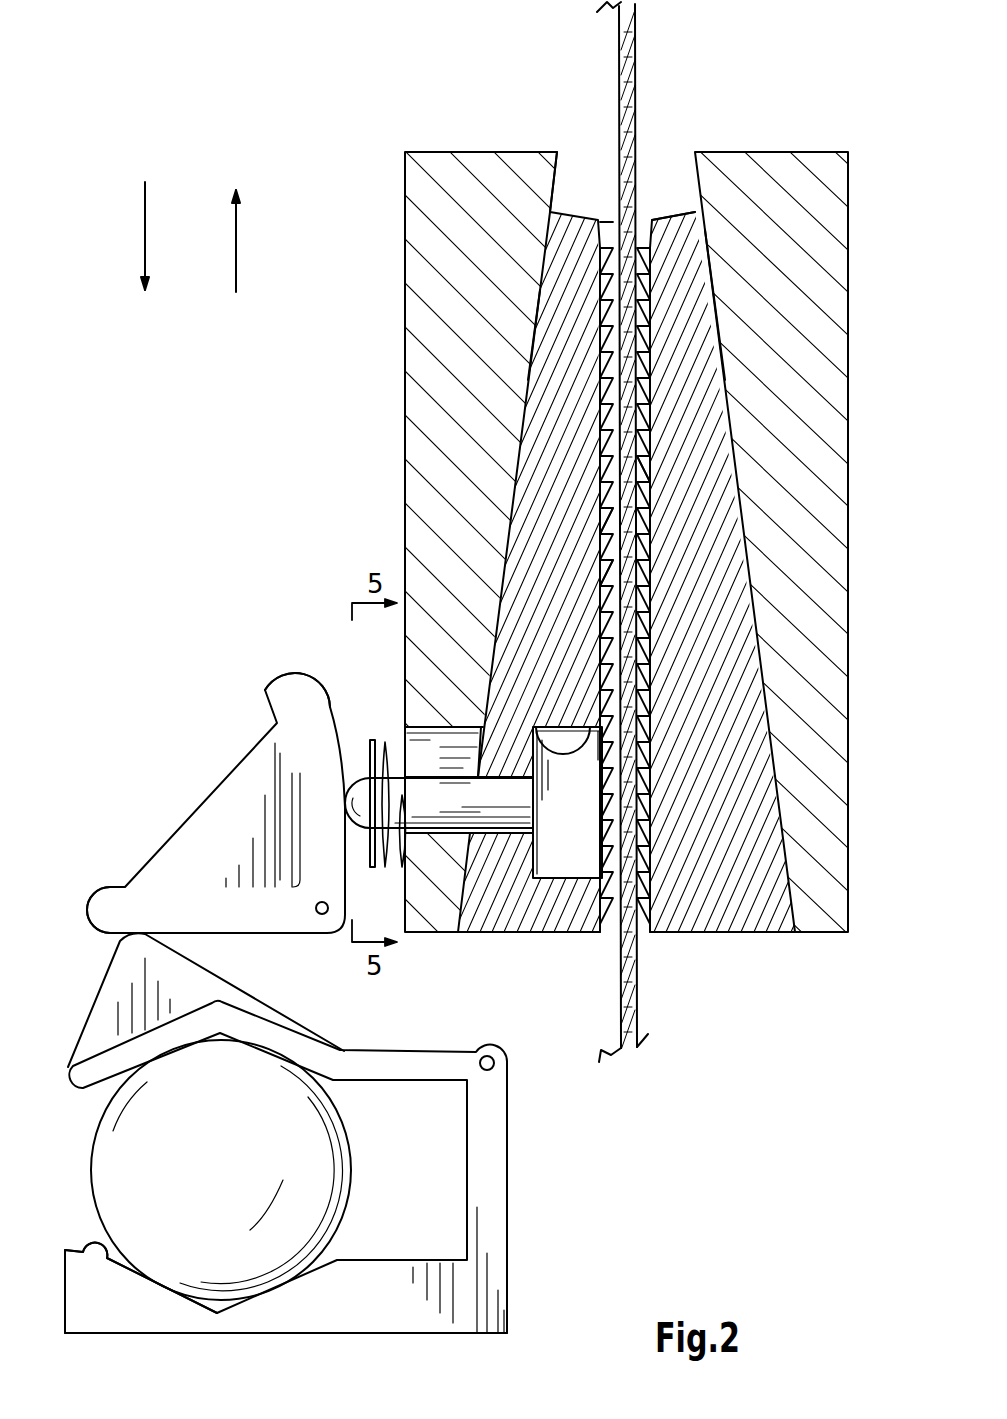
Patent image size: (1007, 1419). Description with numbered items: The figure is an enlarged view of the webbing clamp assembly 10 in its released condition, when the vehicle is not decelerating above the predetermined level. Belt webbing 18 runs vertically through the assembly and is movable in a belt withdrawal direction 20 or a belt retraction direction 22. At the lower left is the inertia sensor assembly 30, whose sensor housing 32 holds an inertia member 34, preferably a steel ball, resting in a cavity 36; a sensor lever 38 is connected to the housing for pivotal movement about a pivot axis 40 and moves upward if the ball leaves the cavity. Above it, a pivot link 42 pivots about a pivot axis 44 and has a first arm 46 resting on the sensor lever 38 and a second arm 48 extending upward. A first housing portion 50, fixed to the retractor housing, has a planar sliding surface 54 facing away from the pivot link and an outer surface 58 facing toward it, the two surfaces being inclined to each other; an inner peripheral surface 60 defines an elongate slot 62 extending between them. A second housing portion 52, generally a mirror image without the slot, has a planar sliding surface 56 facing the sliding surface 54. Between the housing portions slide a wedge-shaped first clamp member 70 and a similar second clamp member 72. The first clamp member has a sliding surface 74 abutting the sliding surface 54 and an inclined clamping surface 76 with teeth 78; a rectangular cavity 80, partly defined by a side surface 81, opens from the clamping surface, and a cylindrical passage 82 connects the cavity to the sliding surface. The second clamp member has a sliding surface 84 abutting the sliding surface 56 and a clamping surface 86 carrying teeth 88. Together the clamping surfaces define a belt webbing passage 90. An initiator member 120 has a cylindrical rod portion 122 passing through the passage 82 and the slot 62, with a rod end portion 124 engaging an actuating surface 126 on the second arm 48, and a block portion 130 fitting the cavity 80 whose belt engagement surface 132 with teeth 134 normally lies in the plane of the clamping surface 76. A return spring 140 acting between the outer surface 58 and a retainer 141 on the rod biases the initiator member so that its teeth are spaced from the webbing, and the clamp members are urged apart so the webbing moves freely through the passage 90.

The webbing clamp assembly 10 is at (736, 1187).
The belt webbing 18 is at (633, 50).
The belt withdrawal direction 20 is at (221, 244).
The belt retraction direction 22 is at (129, 236).
The inertia sensor assembly 30 is at (507, 1347).
The sensor housing 32 is at (317, 1334).
The inertia member 34 is at (89, 1200).
The cavity 36 is at (110, 1263).
The sensor lever 38 is at (79, 990).
The pivot axis 40 is at (480, 1063).
The pivot link 42 is at (218, 760).
The pivot axis 44 is at (316, 912).
The first arm 46 is at (105, 907).
The second arm 48 is at (288, 686).
The first housing portion 50 is at (453, 148).
The second housing portion 52 is at (787, 138).
The planar sliding surface 54 is at (555, 168).
The planar sliding surface 56 is at (687, 168).
The outer surface 58 is at (405, 173).
The inner peripheral surface 60 is at (472, 757).
The elongate slot 62 is at (417, 743).
The first clamp member 70 is at (526, 297).
The second clamp member 72 is at (719, 240).
The planar sliding surface 74 is at (528, 374).
The planar clamping surface 76 is at (610, 563).
The teeth 78 is at (650, 457).
The cavity 80 is at (542, 747).
The side surface 81 is at (600, 757).
The cylindrical passage 82 is at (450, 783).
The planar sliding surface 84 is at (715, 305).
The planar clamping surface 86 is at (602, 520).
The teeth 88 is at (648, 445).
The belt webbing passage 90 is at (608, 235).
The initiator member 120 is at (503, 844).
The cylindrical rod portion 122 is at (458, 810).
The rod end portion 124 is at (347, 810).
The actuating surface 126 is at (332, 715).
The block portion 130 is at (577, 850).
The belt engagement surface 132 is at (603, 843).
The teeth 134 is at (610, 884).
The return spring 140 is at (373, 750).
The retainer 141 is at (338, 757).